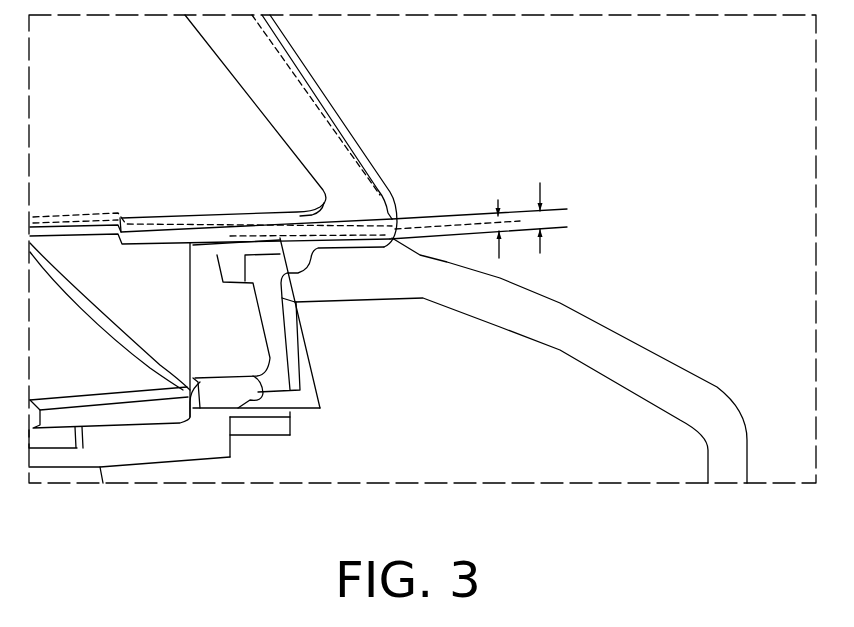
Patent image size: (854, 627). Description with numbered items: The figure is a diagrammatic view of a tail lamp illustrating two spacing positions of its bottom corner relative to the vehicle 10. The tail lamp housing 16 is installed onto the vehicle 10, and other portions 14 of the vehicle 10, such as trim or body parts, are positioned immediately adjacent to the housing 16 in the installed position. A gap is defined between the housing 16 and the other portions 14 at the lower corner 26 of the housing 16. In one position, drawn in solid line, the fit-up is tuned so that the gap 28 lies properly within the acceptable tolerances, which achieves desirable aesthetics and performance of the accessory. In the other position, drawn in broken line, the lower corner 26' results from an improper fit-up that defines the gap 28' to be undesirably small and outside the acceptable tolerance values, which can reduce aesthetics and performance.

The vehicle 10 is at (745, 333).
The other portions of the vehicle 14 is at (522, 303).
The housing 16 is at (265, 88).
The lower corner 26 is at (424, 220).
The lower corner 26' is at (457, 204).
The gap 28 is at (571, 233).
The gap 28' is at (518, 199).